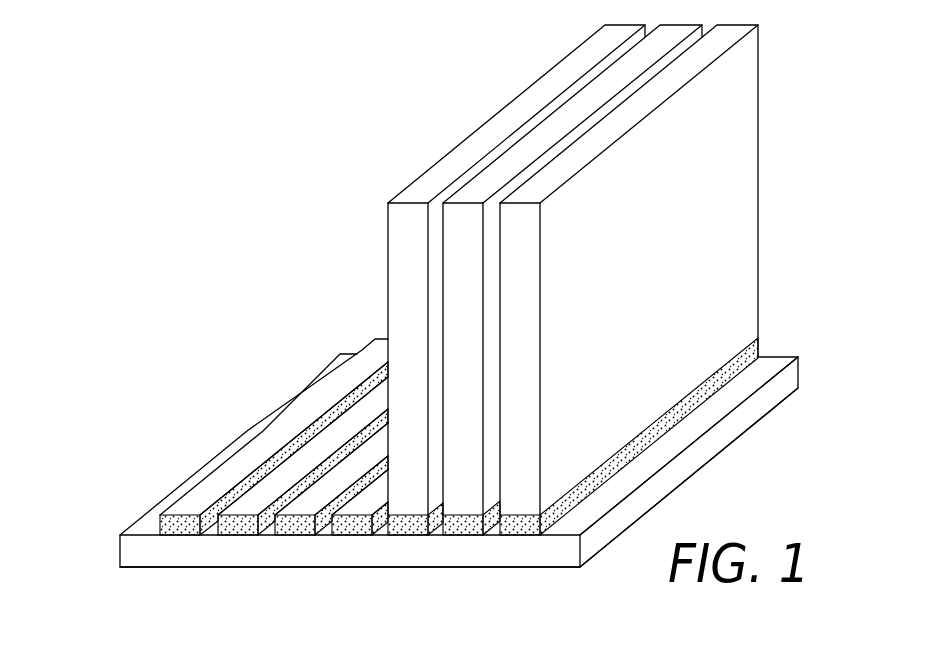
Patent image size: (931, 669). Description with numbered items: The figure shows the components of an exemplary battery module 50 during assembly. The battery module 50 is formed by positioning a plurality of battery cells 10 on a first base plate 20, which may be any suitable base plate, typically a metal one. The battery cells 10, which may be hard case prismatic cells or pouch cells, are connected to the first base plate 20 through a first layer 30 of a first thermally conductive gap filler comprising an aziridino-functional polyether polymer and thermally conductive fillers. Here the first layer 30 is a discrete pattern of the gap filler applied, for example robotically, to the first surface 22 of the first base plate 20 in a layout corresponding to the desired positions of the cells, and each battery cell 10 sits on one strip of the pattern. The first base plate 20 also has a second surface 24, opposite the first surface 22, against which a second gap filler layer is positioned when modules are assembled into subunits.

The battery cells 10 is at (542, 92).
The first base plate 20 is at (118, 553).
The first surface 22 is at (140, 523).
The second surface 24 is at (190, 570).
The first layer 30 is at (305, 413).
The battery module 50 is at (292, 80).